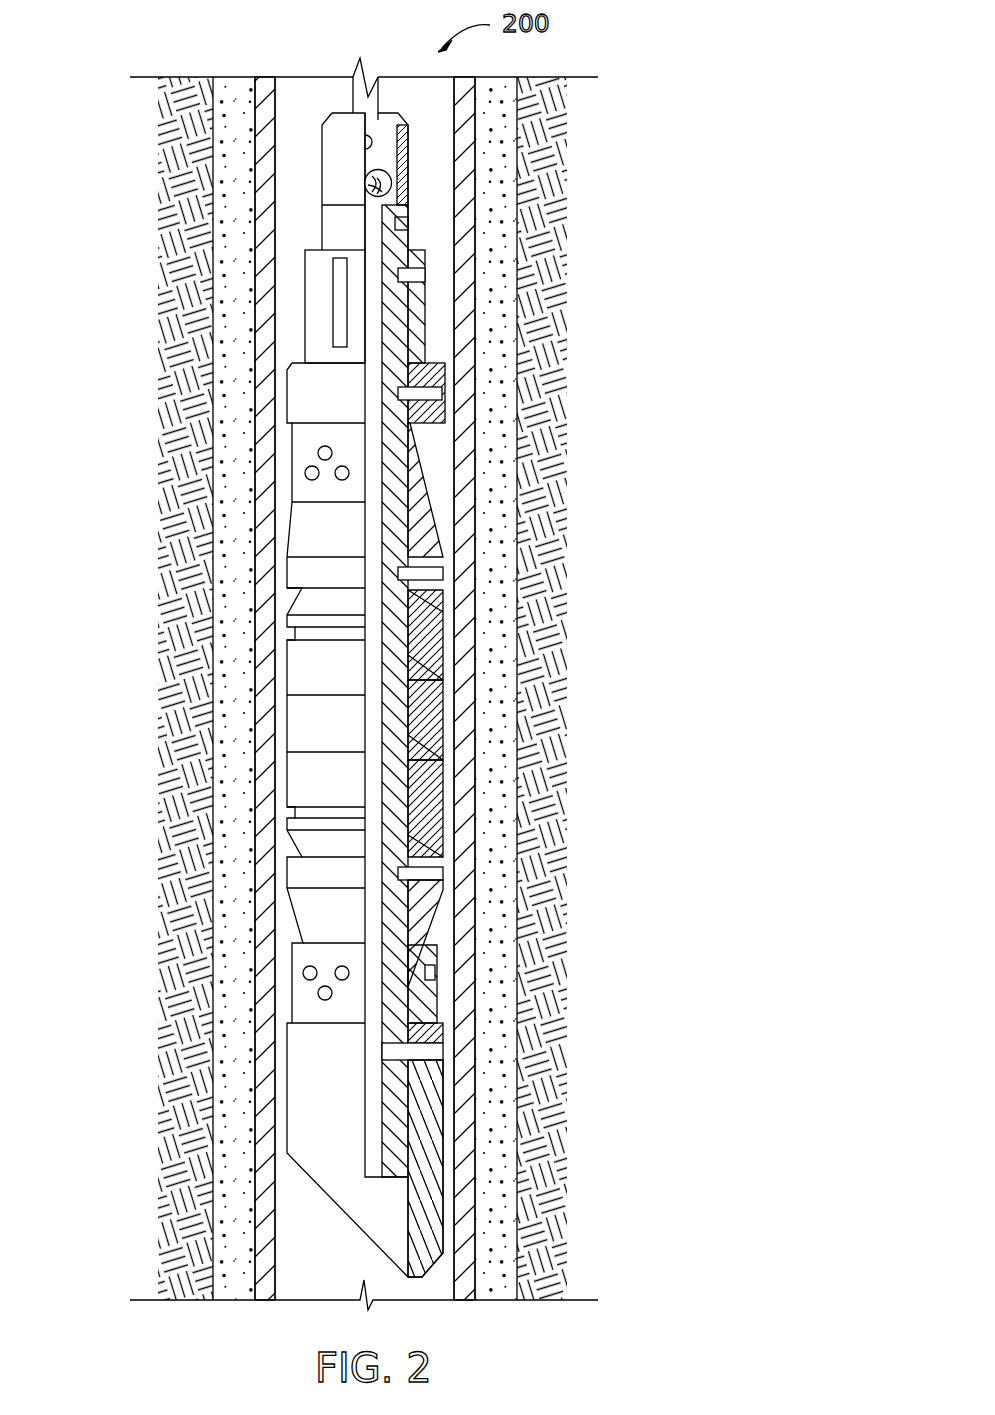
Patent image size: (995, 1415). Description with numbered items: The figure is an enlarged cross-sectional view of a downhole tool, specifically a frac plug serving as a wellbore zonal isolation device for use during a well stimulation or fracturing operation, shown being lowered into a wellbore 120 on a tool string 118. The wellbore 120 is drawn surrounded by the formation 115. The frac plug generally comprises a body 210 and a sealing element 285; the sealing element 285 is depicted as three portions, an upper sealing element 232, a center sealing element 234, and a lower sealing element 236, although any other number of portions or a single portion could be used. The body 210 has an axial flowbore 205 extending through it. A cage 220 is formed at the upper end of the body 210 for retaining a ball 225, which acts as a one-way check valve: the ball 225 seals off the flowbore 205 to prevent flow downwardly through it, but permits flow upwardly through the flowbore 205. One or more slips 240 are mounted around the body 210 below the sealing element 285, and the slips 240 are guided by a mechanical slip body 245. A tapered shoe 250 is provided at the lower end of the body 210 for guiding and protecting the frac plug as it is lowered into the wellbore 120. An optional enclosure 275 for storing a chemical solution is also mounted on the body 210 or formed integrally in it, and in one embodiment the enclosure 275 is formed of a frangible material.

The tool string 118 is at (378, 93).
The ball 225 is at (375, 170).
The cage 220 is at (400, 195).
The wellbore 120 is at (297, 196).
The enclosure 275 is at (350, 298).
The body 210 is at (407, 333).
The axial flowbore 205 is at (372, 525).
The upper sealing element 232 is at (427, 662).
The center sealing element 234 is at (433, 727).
The lower sealing element 236 is at (433, 787).
The sealing element 285 is at (591, 723).
The mechanical slip body 245 is at (423, 917).
The slips 240 is at (427, 1003).
The formation 115 is at (540, 1113).
The tapered shoe 250 is at (427, 1213).